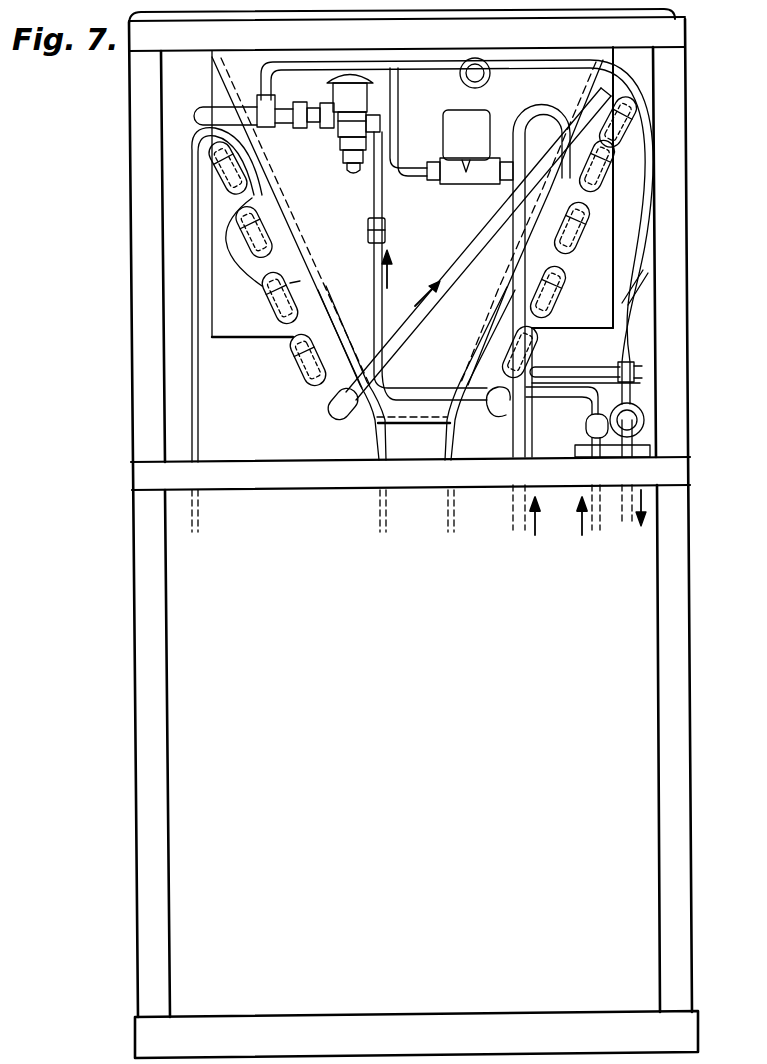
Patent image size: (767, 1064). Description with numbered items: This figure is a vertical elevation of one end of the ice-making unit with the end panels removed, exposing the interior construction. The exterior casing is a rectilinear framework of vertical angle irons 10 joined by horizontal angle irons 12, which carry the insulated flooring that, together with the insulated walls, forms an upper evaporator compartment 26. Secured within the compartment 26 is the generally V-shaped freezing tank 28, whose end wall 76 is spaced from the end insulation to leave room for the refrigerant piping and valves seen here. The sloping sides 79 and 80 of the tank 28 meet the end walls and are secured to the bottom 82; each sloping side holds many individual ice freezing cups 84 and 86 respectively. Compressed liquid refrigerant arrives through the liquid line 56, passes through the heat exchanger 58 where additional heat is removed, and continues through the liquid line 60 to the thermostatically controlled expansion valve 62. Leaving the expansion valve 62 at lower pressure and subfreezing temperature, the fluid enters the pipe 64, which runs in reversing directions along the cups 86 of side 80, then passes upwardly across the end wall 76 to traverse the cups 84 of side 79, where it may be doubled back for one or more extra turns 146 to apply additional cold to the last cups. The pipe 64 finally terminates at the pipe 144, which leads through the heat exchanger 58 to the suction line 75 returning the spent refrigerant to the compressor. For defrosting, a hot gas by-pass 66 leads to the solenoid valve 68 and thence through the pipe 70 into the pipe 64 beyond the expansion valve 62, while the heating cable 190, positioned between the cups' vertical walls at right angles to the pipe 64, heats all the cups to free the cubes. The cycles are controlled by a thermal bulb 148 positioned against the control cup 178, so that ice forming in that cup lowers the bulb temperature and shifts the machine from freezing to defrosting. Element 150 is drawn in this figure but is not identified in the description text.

The vertical angle irons 10 is at (160, 632).
The horizontal angle irons 12 is at (275, 478).
The evaporator compartment 26 is at (640, 76).
The freezing tank 28 is at (252, 281).
The liquid line 56 is at (594, 441).
The heat exchanger 58 is at (640, 418).
The liquid line 60 is at (382, 197).
The expansion valve 62 is at (353, 95).
The pipe 64 is at (201, 113).
The hot gas by-pass 66 is at (522, 444).
The solenoid valve 68 is at (466, 185).
The pipe 70 is at (286, 65).
The suction line 75 is at (640, 433).
The end wall 76 is at (307, 333).
The sloping side 79 is at (494, 312).
The sloping side 80 is at (284, 258).
The bottom 82 is at (416, 409).
The ice freezing cups 84 is at (560, 256).
The ice freezing cups 86 is at (300, 281).
The pipe 144 is at (572, 373).
The extra turns of pipe 146 is at (487, 404).
The thermal bulb 148 is at (281, 234).
The tube 150 is at (200, 412).
The control cup 178 is at (236, 240).
The heating cable 190 is at (230, 260).